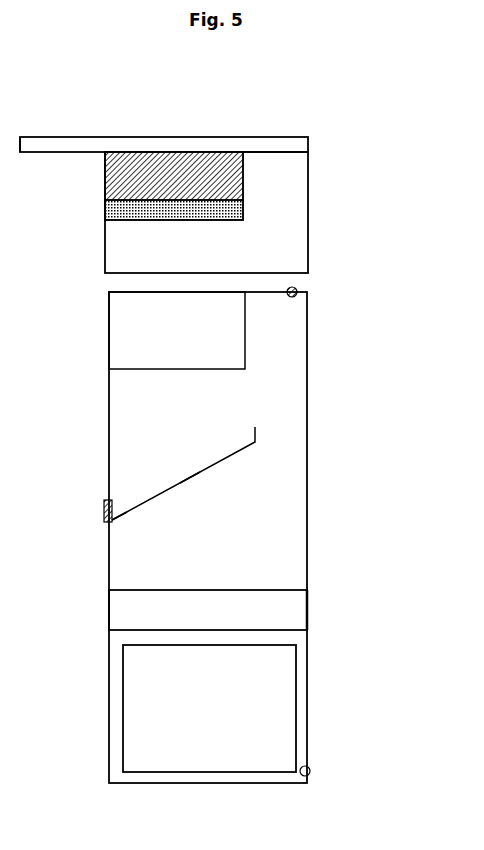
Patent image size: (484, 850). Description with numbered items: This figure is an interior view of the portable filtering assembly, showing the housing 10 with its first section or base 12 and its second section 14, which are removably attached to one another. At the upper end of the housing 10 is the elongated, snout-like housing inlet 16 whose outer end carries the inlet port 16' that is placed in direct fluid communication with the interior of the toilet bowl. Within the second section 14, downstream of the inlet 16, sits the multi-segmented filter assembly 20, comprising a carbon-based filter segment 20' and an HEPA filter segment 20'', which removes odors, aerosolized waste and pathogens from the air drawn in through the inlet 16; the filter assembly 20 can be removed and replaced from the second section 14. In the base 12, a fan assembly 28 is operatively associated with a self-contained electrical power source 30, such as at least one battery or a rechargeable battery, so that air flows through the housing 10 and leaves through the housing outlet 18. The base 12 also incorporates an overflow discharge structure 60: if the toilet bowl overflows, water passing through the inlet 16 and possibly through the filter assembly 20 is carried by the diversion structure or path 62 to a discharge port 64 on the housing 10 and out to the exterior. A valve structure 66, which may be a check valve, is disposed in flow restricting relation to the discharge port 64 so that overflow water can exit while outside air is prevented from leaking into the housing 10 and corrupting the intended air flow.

The housing 10 is at (328, 351).
The first section or base 12 is at (307, 437).
The second section 14 is at (308, 204).
The housing inlet 16 is at (164, 130).
The inlet port 16' is at (28, 128).
The housing outlet 18 is at (307, 608).
The filter assembly 20 is at (235, 186).
The carbon-based filter segment 20' is at (143, 176).
The HEPA filter segment 20'' is at (142, 210).
The fan assembly 28 is at (125, 613).
The self-contained electrical power source 30 is at (283, 713).
The overflow discharge structure 60 is at (165, 453).
The diversion structure or path 62 is at (180, 483).
The discharge port 64 is at (127, 512).
The valve structure 66 is at (104, 508).